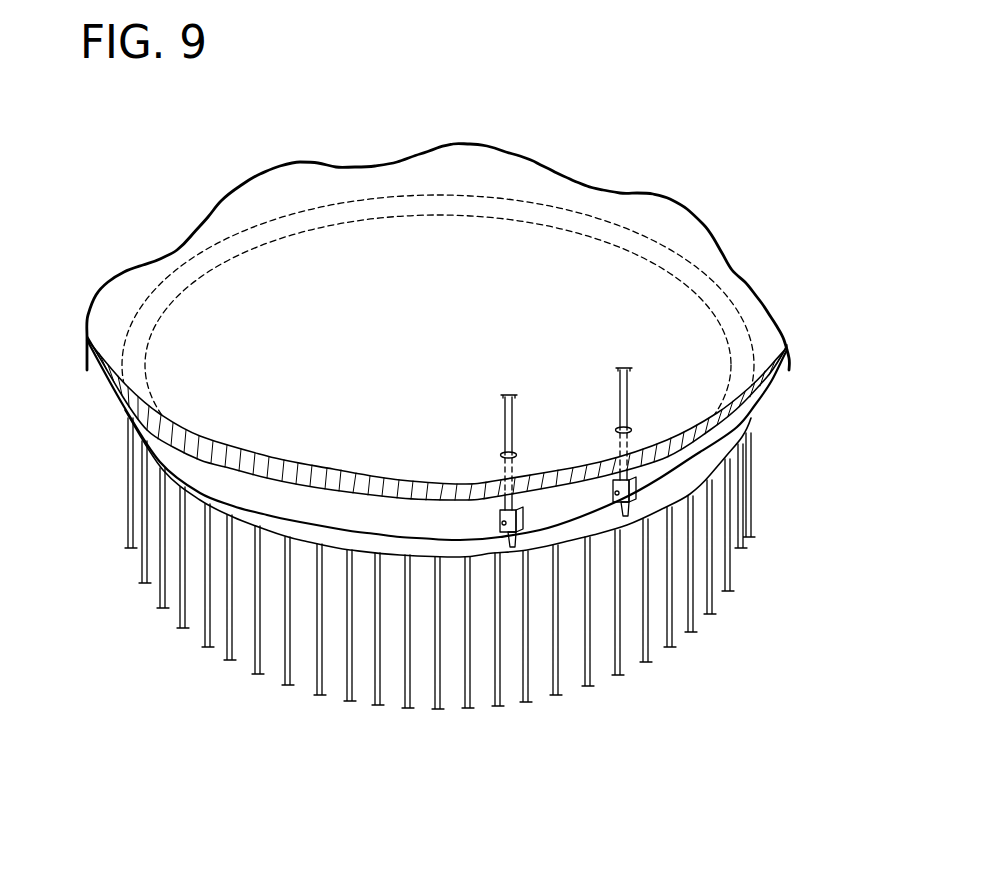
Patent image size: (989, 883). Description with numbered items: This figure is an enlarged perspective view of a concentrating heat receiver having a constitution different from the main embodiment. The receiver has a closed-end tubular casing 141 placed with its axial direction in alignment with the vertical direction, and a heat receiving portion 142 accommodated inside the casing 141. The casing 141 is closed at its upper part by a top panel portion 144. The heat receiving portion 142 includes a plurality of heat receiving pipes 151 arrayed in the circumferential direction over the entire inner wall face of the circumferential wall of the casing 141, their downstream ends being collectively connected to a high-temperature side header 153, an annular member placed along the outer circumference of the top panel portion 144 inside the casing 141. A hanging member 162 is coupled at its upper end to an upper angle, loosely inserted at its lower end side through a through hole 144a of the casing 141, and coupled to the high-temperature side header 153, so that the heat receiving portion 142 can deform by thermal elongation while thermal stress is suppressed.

The casing 141 is at (404, 339).
The top panel portion 144 is at (190, 390).
The through hole 144a is at (512, 450).
The high-temperature side header 153 is at (163, 433).
The heat receiving portion 142 is at (690, 508).
The heat receiving pipes 151 is at (228, 632).
The hanging member 162 is at (636, 462).